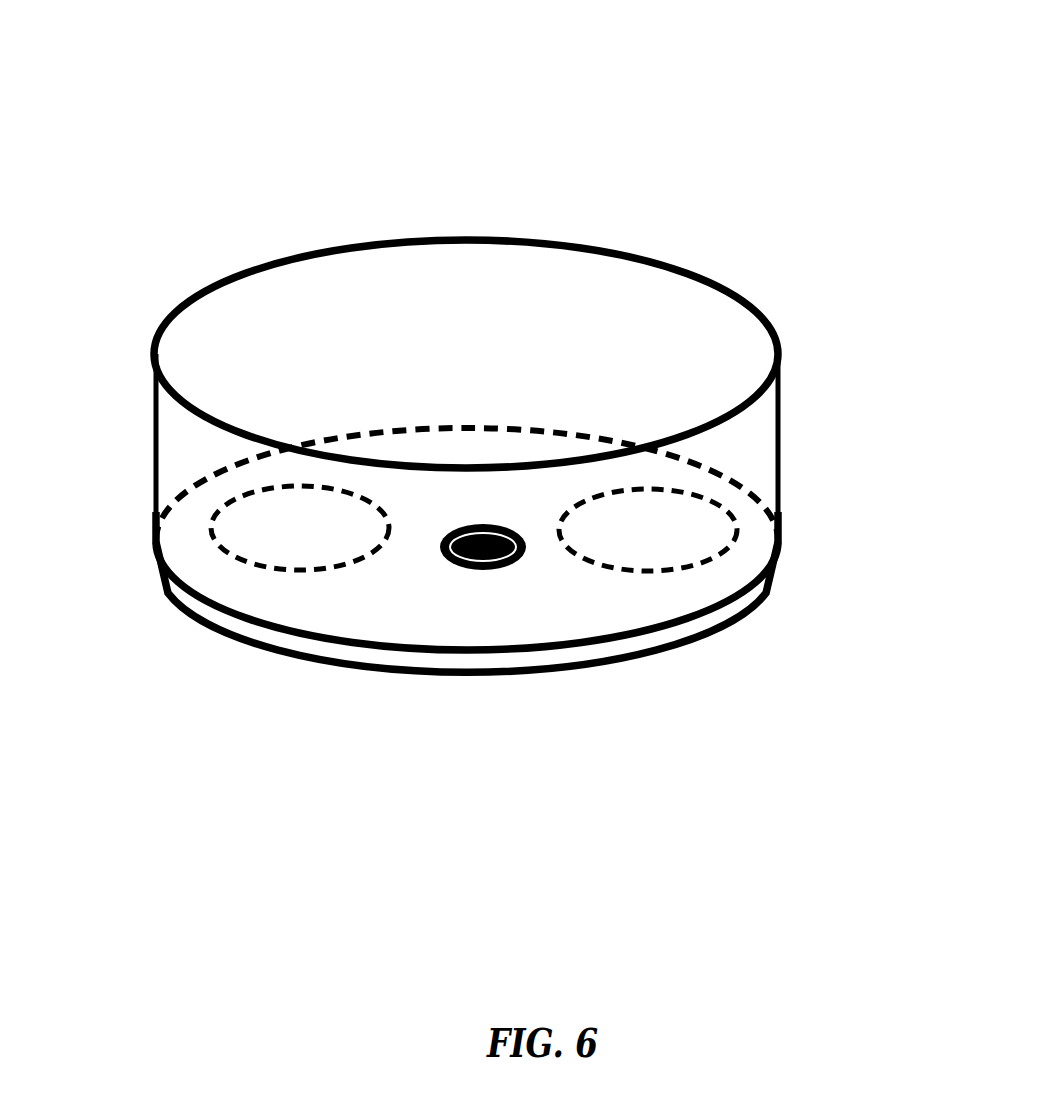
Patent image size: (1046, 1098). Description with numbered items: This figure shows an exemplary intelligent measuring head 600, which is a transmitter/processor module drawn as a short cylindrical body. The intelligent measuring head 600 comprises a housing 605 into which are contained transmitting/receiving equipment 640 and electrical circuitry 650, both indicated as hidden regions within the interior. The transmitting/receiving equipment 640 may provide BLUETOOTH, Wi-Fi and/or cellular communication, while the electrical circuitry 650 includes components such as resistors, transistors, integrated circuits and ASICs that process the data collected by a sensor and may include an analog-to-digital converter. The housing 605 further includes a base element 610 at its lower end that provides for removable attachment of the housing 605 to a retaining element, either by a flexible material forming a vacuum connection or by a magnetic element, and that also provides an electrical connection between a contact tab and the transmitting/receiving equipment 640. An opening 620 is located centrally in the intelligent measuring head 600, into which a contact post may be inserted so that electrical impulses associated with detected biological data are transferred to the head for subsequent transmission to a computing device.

The intelligent measuring head 600 is at (525, 208).
The housing 605 is at (793, 340).
The base element 610 is at (742, 643).
The opening 620 is at (457, 584).
The transmitting/receiving equipment 640 is at (211, 566).
The electrical circuitry 650 is at (636, 598).